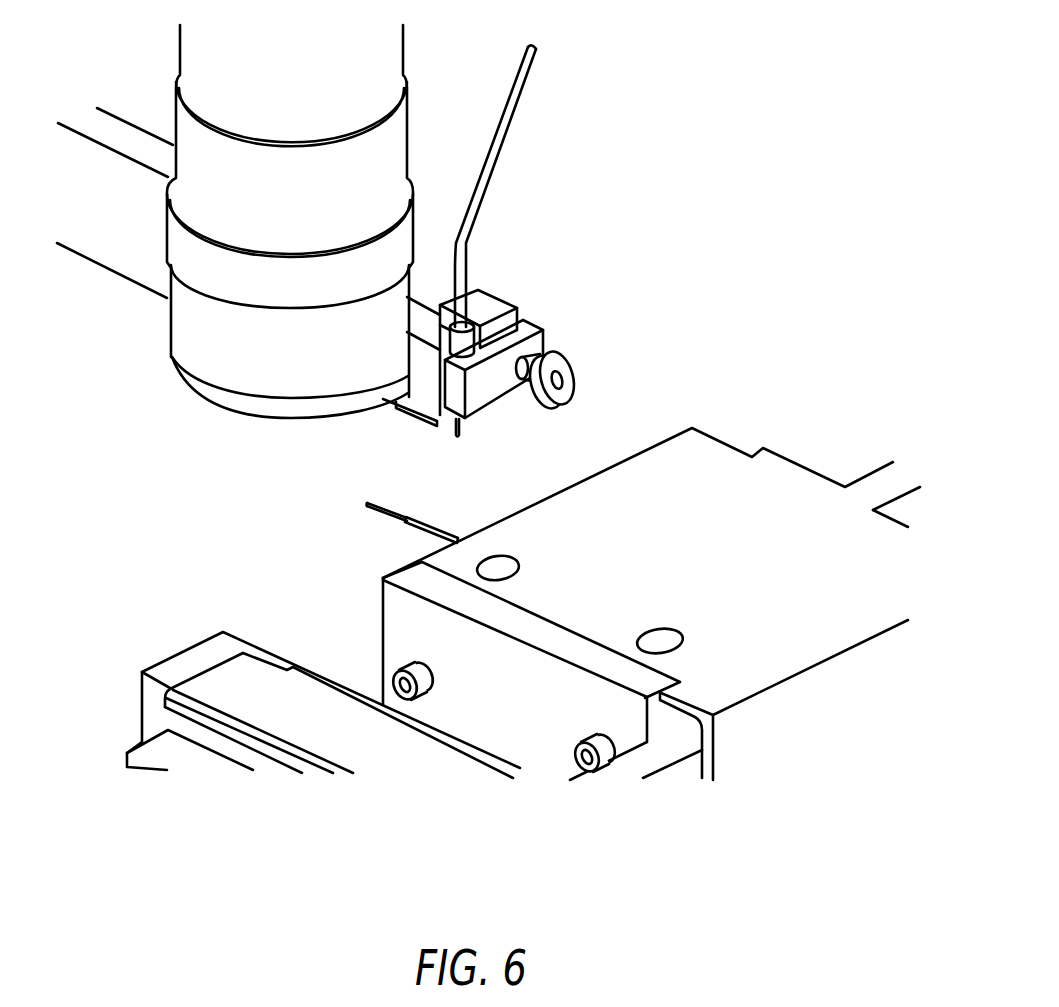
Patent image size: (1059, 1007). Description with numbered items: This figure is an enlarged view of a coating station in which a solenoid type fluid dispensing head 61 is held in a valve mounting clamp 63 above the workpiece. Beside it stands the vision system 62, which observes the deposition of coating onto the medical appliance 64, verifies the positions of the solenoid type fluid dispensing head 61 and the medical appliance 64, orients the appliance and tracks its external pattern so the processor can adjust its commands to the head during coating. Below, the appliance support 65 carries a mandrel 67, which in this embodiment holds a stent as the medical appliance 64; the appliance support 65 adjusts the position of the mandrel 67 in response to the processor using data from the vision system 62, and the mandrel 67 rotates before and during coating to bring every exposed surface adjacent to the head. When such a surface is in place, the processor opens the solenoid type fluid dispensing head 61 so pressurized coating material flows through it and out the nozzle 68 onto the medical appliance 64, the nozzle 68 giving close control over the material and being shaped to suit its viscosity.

The solenoid type fluid dispensing head 61 is at (500, 303).
The vision system 62 is at (146, 357).
The valve mounting clamp 63 is at (572, 391).
The medical appliance 64 is at (403, 533).
The appliance support 65 is at (736, 438).
The mandrel 67 is at (392, 510).
The nozzle 68 is at (461, 430).